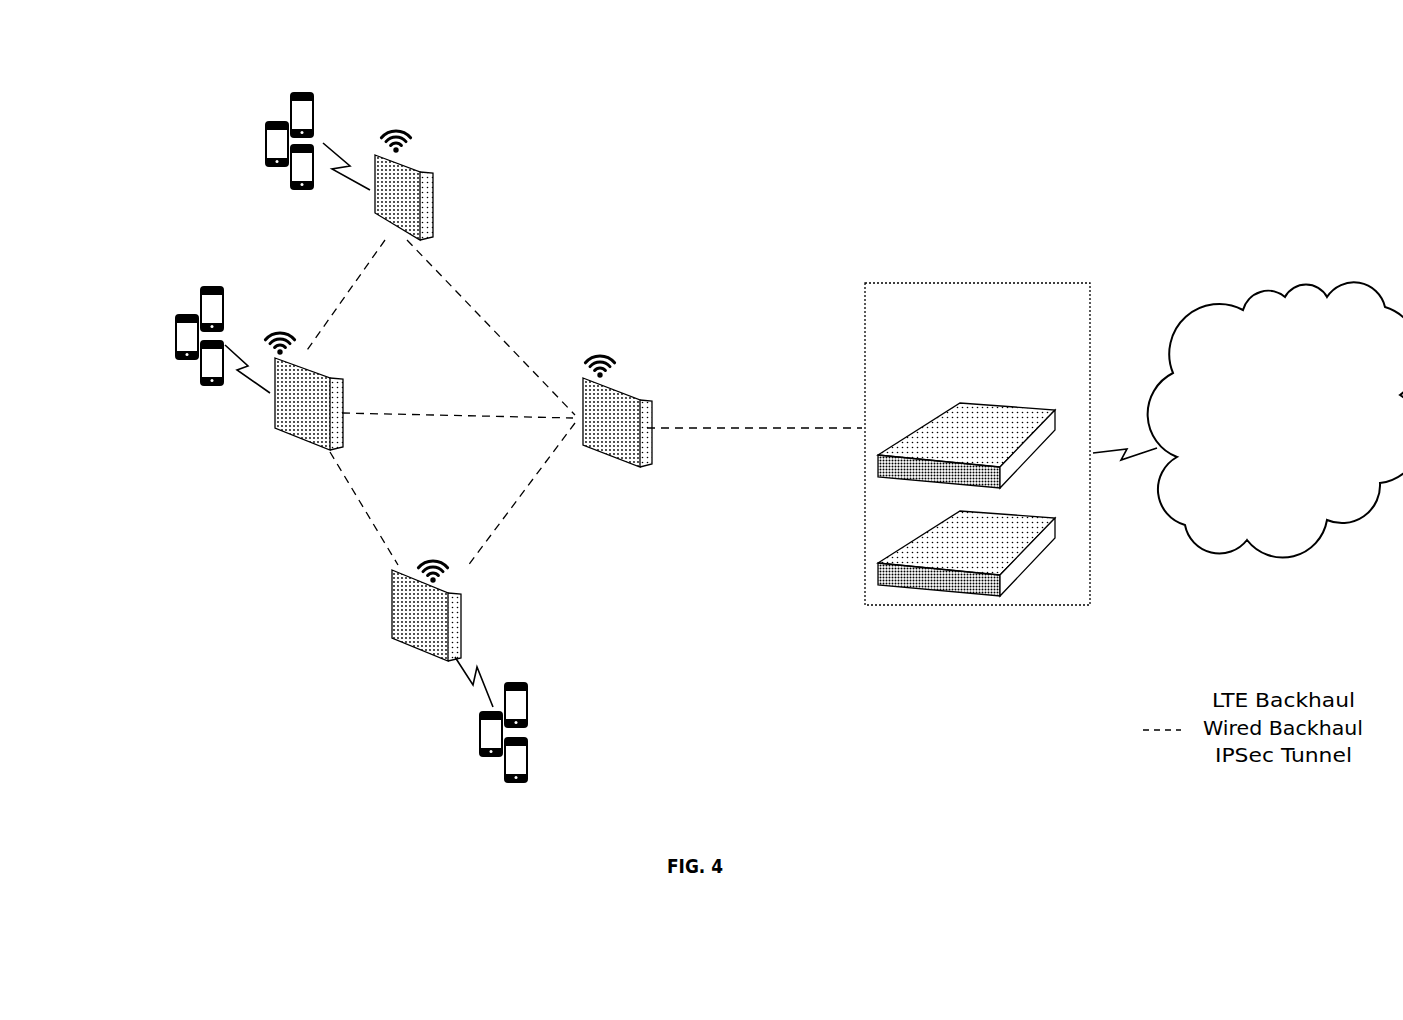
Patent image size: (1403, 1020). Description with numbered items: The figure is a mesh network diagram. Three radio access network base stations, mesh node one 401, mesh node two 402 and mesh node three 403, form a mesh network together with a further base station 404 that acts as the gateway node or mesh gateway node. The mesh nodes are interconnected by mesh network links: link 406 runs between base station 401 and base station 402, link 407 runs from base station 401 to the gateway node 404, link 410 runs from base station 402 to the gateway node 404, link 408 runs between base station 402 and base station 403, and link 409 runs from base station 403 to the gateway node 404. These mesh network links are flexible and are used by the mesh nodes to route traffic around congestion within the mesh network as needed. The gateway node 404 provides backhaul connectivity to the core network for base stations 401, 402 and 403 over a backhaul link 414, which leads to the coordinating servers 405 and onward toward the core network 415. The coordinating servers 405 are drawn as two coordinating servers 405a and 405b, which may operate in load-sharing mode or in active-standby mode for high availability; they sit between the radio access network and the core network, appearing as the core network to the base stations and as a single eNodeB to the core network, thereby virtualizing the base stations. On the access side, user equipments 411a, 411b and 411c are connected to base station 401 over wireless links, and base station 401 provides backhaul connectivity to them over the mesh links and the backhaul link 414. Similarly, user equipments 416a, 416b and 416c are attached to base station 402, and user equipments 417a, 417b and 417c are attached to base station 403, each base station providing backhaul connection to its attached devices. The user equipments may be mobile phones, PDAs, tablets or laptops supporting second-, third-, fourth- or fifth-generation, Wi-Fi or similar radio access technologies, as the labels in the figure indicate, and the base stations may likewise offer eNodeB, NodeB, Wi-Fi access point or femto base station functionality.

The mesh node 1 base station 401 is at (425, 165).
The mesh node 2 base station 402 is at (273, 430).
The mesh node 3 base station 403 is at (402, 655).
The gateway node base station 404 is at (630, 388).
The coordinating servers 405 is at (947, 278).
The first coordinating server 405a is at (1032, 405).
The second coordinating server 405b is at (1032, 512).
The mesh network link 406 is at (343, 313).
The mesh network link 407 is at (503, 333).
The mesh network link 408 is at (352, 503).
The mesh network link 409 is at (527, 495).
The mesh network link 410 is at (452, 410).
The user equipment 411a is at (263, 128).
The user equipment 411b is at (288, 192).
The user equipment 411c is at (317, 112).
The backhaul link 414 is at (773, 437).
The core network 415 is at (1282, 272).
The 4G UE 416a is at (172, 340).
The 3G UE 416b is at (208, 285).
The 5G UE 416c is at (197, 368).
The Wi-Fi UE 417a is at (475, 725).
The 3G UE 417b is at (517, 785).
The 4G UE 417c is at (515, 678).